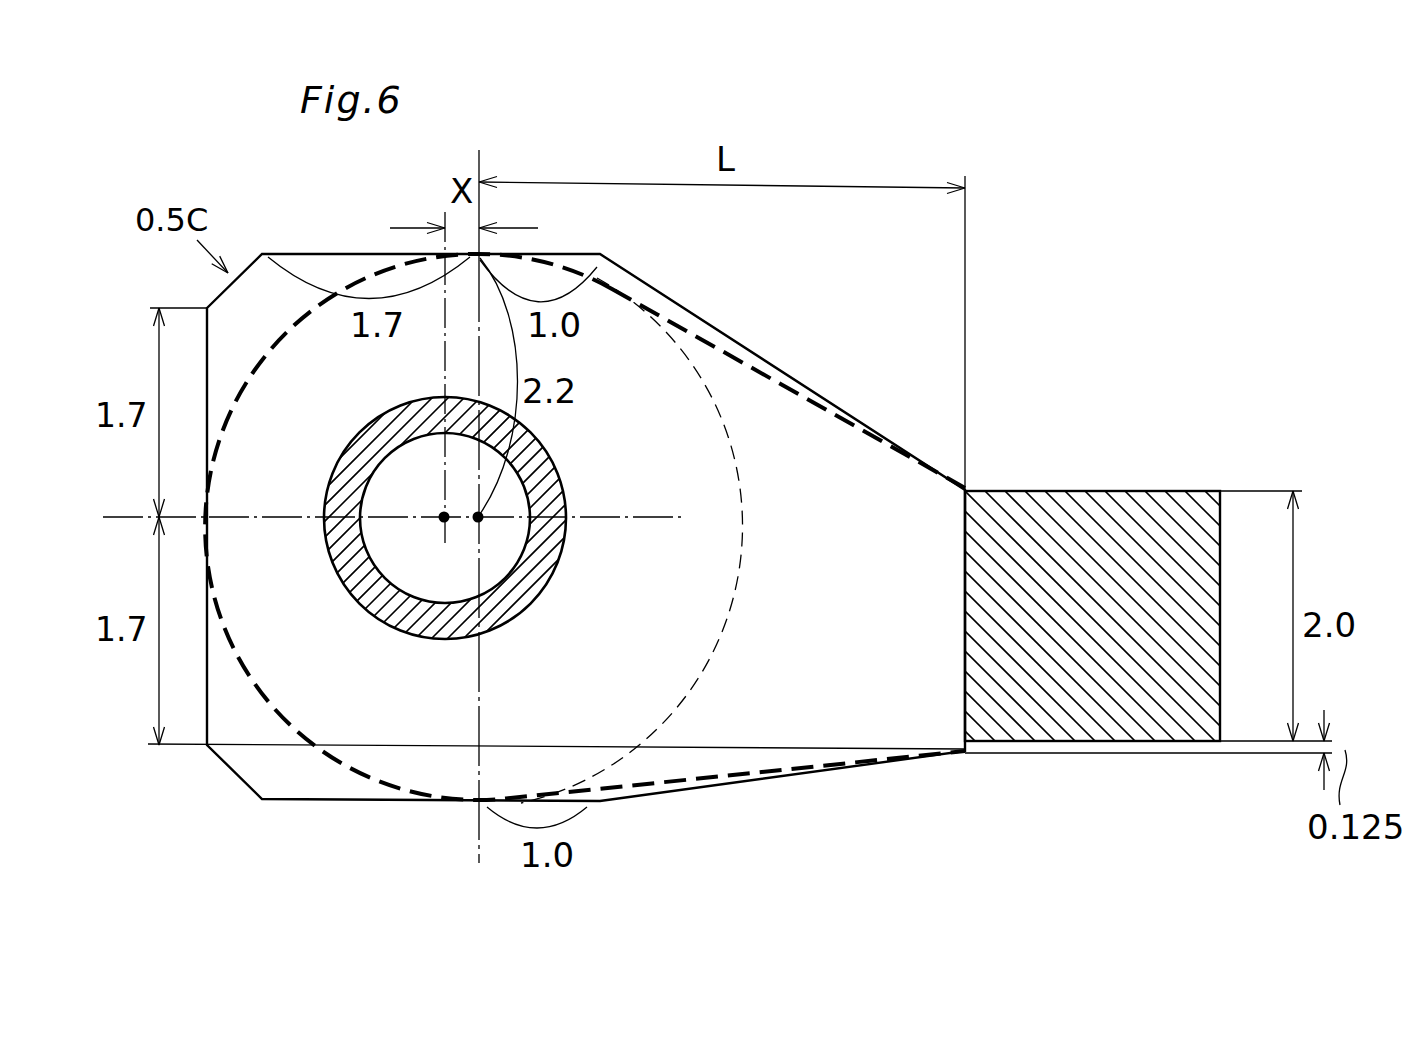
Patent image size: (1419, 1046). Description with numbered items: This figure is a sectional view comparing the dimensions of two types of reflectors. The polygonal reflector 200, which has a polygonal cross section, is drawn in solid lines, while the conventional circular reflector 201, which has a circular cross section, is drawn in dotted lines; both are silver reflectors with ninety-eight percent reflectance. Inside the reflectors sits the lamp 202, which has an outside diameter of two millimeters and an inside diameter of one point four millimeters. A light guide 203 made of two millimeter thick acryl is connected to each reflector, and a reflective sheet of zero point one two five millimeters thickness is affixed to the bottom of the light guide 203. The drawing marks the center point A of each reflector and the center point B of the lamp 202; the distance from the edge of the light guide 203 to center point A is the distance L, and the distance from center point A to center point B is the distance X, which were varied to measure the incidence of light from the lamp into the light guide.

The polygonal reflector 200 is at (220, 762).
The circular reflector 201 is at (277, 705).
The lamp 202 is at (443, 645).
The light guide 203 is at (1018, 515).
The center point of reflector A is at (480, 514).
The center point of lamp B is at (444, 518).